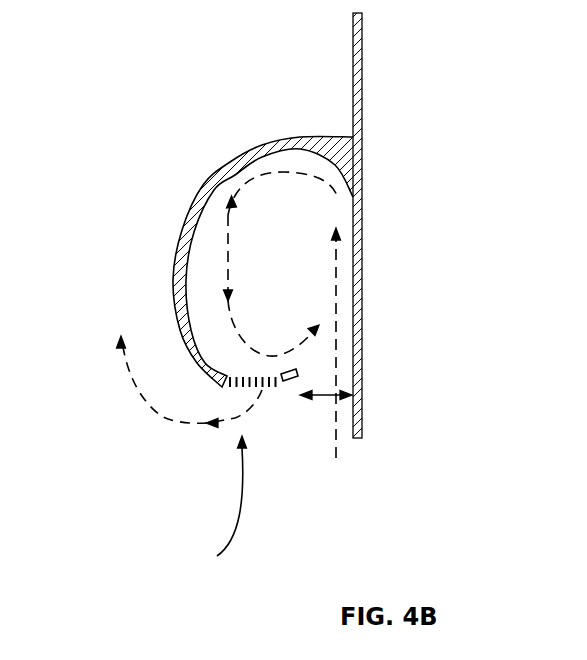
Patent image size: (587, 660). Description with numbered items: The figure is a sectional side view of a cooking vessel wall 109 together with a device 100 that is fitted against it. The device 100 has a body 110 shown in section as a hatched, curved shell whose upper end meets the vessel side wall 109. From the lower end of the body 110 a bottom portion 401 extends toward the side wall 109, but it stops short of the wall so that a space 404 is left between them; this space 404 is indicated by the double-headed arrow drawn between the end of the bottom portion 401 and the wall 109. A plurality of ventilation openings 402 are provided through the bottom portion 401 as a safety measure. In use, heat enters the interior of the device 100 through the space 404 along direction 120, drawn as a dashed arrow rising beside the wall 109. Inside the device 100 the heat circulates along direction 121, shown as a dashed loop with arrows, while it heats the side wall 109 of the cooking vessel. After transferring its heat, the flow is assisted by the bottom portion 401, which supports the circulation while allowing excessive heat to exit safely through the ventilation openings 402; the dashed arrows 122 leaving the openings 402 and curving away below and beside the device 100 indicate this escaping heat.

The device 100 is at (234, 122).
The cooking vessel wall 109 is at (367, 90).
The body 110 is at (182, 230).
The direction 120 is at (341, 438).
The direction 121 is at (345, 196).
The external airflow 122 is at (130, 390).
The bottom portion 401 is at (210, 503).
The ventilation openings 402 is at (272, 397).
The space 404 is at (352, 395).